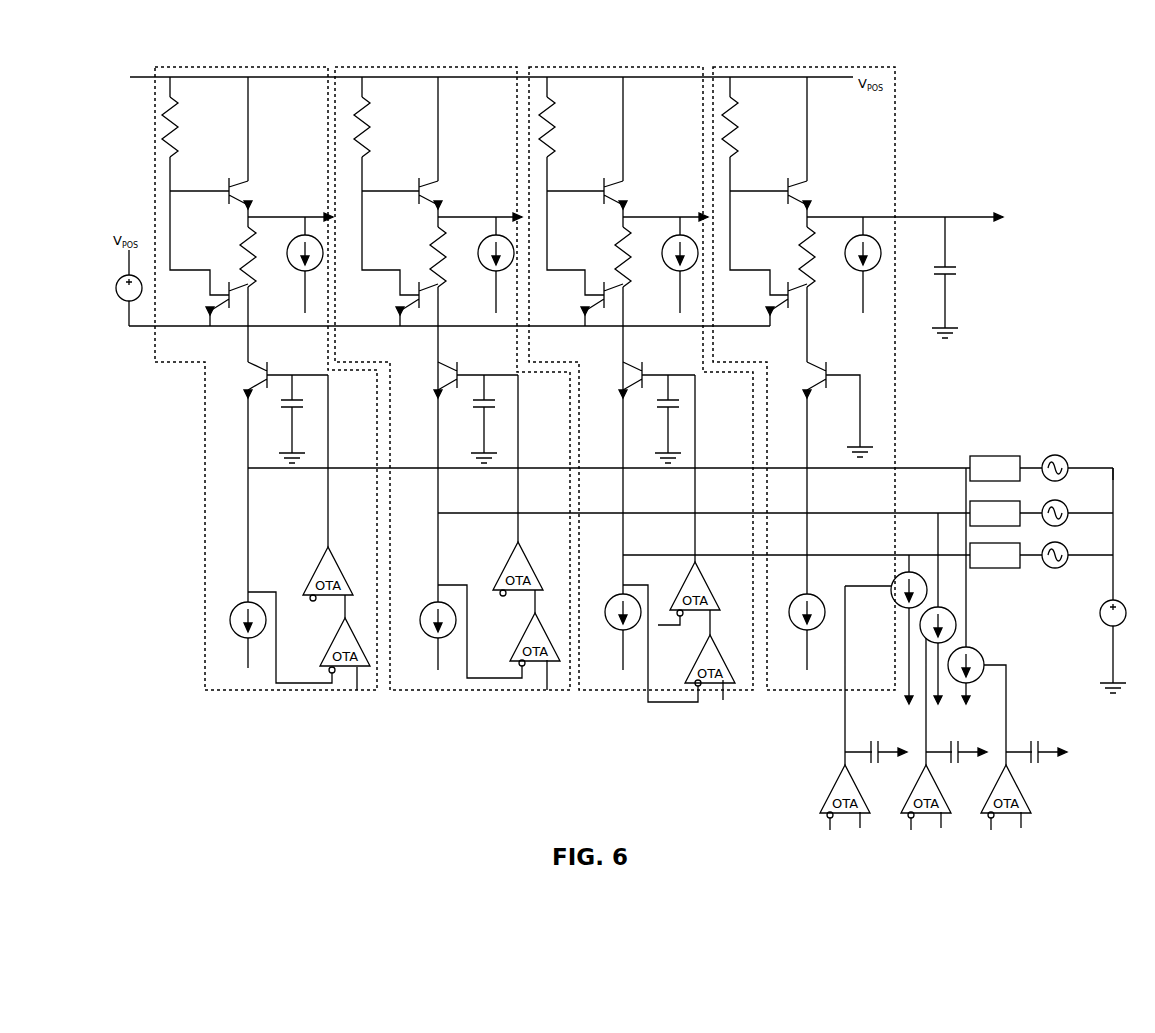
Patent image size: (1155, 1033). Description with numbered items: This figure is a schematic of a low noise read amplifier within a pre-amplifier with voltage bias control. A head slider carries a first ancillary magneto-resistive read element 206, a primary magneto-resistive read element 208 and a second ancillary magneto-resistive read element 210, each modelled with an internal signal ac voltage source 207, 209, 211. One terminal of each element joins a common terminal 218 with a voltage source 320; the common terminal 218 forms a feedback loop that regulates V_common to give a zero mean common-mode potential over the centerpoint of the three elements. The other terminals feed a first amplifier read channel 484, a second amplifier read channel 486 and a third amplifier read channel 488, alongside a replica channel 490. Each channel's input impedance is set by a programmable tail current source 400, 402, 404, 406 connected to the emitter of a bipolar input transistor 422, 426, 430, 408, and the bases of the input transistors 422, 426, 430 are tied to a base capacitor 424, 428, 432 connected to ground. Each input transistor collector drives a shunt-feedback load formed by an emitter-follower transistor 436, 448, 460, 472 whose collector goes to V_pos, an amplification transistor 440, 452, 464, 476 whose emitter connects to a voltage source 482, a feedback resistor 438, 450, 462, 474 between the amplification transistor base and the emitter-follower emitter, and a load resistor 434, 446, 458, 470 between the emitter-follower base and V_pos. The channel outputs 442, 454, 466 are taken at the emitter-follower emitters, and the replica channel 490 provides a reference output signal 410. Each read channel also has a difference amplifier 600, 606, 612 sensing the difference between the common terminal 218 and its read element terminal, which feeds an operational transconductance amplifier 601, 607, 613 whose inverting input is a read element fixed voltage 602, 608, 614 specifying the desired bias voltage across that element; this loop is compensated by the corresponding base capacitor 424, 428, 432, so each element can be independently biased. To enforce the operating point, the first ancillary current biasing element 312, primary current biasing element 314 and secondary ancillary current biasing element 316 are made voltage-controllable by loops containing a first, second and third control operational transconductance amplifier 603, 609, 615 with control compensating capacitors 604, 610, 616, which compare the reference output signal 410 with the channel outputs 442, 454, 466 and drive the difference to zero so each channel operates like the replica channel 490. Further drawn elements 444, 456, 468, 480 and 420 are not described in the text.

The first amplifier read channel 484 is at (255, 66).
The second amplifier read channel 486 is at (440, 66).
The third amplifier read channel 488 is at (615, 66).
The replica channel 490 is at (803, 66).
The load resistor 434 is at (183, 100).
The emitter-follower transistor 436 is at (229, 178).
The feedback resistor 438 is at (236, 228).
The amplification transistor 440 is at (210, 299).
The first signal output 442 is at (318, 213).
The current source 444 is at (298, 275).
The load resistor 446 is at (372, 102).
The emitter-follower transistor 448 is at (419, 178).
The feedback resistor 450 is at (426, 228).
The amplification transistor 452 is at (400, 300).
The output 454 is at (508, 213).
The current source 456 is at (488, 268).
The load resistor 458 is at (557, 102).
The emitter-follower transistor 460 is at (604, 178).
The feedback resistor 462 is at (611, 228).
The amplification transistor 464 is at (585, 300).
The output 466 is at (693, 213).
The second amplifier read channel 468 is at (672, 268).
The load resistor 470 is at (745, 100).
The emitter-follower transistor 472 is at (788, 178).
The feedback resistor 474 is at (796, 228).
The amplification transistor 476 is at (770, 300).
The current source 480 is at (853, 280).
The reference output signal 410 is at (990, 207).
The capacitor 420 is at (960, 270).
The voltage source 482 is at (116, 288).
The bipolar input transistor 408 is at (822, 386).
The bipolar input transistor 422 is at (268, 370).
The base capacitor 424 is at (290, 406).
The bipolar input transistor 426 is at (458, 370).
The base capacitor 428 is at (482, 406).
The bipolar input transistor 430 is at (643, 370).
The base capacitor 432 is at (666, 406).
The programmable tail current source 400 is at (240, 636).
The programmable tail current source 402 is at (432, 636).
The programmable tail current source 404 is at (616, 630).
The programmable tail current source 406 is at (826, 625).
The first channel operational transconductance amplifier 601 is at (320, 567).
The first read element fixed voltage 602 is at (312, 601).
The first channel difference amplifier 600 is at (328, 664).
The operational transconductance amplifier 607 is at (508, 567).
The second read element fixed voltage 608 is at (503, 596).
The difference amplifier 606 is at (518, 650).
The operational transconductance amplifier 613 is at (684, 585).
The third read element fixed voltage 614 is at (670, 628).
The difference amplifier 612 is at (725, 652).
The common terminal 218 is at (357, 690).
The first ancillary magneto-resistive read element 206 is at (1008, 455).
The primary magneto-resistive read element 208 is at (1010, 501).
The second ancillary magneto-resistive read element 210 is at (1012, 568).
The first signal ac voltage source 207 is at (1065, 476).
The signal ac voltage source 209 is at (1065, 521).
The signal ac voltage source 211 is at (1065, 563).
The voltage source 320 is at (1100, 613).
The first ancillary current biasing element 312 is at (982, 652).
The primary current biasing element 314 is at (953, 611).
The secondary ancillary current biasing element 316 is at (893, 605).
The third control compensating capacitor 616 is at (878, 752).
The second control compensating capacitor 610 is at (958, 752).
The first control compensating capacitor 604 is at (1038, 752).
The third control operational transconductance amplifier 615 is at (858, 775).
The second control operational transconductance amplifier 609 is at (938, 775).
The first control operational transconductance amplifier 603 is at (1018, 775).